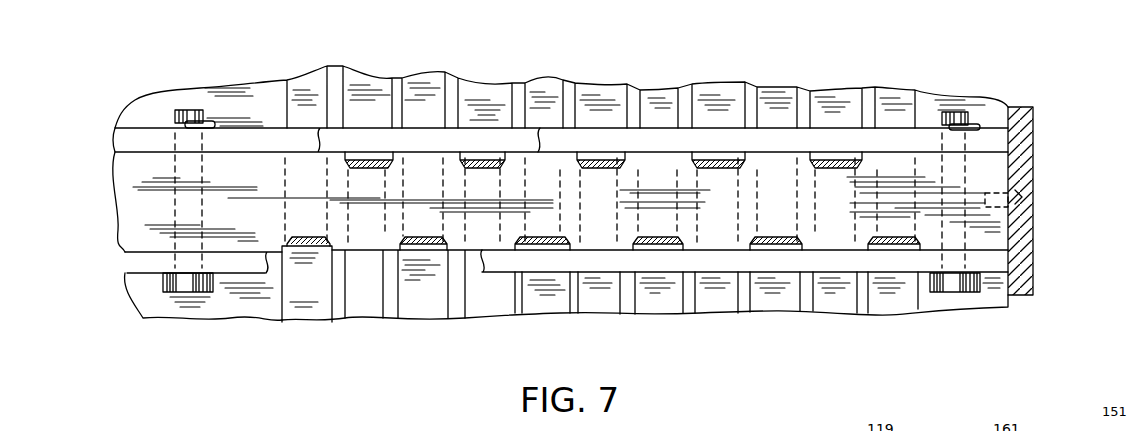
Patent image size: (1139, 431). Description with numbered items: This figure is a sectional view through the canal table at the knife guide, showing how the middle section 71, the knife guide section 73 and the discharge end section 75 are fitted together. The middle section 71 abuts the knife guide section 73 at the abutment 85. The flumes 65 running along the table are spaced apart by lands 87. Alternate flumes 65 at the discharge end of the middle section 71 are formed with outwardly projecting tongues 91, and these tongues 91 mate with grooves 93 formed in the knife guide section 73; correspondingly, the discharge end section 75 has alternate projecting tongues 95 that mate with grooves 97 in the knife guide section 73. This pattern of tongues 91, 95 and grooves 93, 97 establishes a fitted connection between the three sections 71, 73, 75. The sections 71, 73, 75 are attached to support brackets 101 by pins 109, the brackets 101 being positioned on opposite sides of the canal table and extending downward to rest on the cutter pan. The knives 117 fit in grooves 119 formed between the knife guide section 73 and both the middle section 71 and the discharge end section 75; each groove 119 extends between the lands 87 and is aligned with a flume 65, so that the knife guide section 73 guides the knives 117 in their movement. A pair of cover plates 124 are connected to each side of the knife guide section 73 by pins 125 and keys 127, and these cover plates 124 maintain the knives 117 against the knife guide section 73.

The flumes 65 is at (785, 295).
The middle section 71 is at (263, 310).
The knife guide section 73 is at (132, 205).
The discharge end section 75 is at (265, 83).
The abutment 85 is at (290, 247).
The lands 87 is at (690, 300).
The tongues 91 is at (380, 250).
The grooves 93 is at (401, 243).
The tongues 95 is at (395, 151).
The grooves 97 is at (537, 157).
The support brackets 101 is at (1035, 121).
The pins 109 is at (1025, 192).
The knives 117 is at (420, 233).
The grooves 119 is at (590, 167).
The cover plates 124 is at (128, 133).
The pins 125 is at (192, 285).
The keys 127 is at (213, 127).